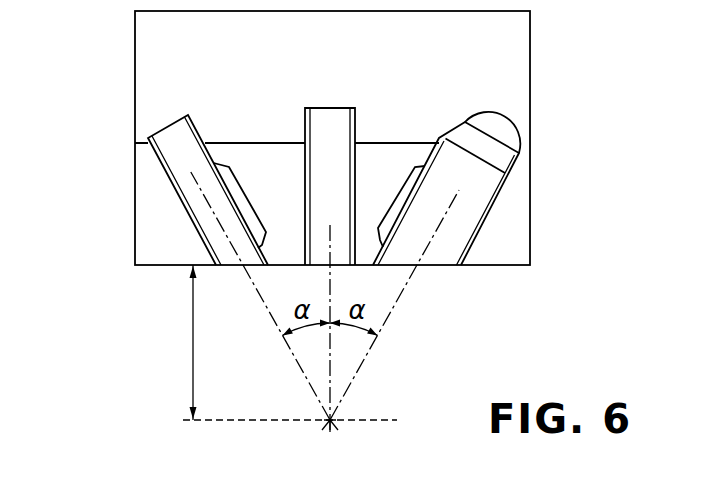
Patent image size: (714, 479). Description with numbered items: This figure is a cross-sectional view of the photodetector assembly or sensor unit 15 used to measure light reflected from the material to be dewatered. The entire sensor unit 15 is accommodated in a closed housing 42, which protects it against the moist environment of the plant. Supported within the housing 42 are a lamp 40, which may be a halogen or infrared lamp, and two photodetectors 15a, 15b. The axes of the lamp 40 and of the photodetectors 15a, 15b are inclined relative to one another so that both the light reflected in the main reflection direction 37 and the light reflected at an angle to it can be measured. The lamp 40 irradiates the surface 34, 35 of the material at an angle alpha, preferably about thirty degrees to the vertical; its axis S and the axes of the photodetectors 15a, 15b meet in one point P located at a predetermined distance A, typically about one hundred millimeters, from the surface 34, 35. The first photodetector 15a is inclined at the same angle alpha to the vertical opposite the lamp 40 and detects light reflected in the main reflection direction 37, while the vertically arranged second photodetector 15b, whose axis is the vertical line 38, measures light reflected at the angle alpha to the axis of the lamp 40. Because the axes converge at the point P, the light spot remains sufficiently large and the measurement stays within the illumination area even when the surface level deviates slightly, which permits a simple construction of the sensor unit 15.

The sensor unit 15 is at (123, 70).
The first photodetector 15a is at (172, 153).
The second photodetector 15b is at (340, 122).
The lamp 40 is at (500, 150).
The housing 42 is at (507, 60).
The main reflection direction 37 is at (257, 293).
The central vertical axis line 38 is at (333, 283).
The surface of the material 34 is at (397, 420).
The surface of the material 35 is at (401, 206).
The second inclined axis line S is at (390, 313).
The distance A is at (192, 347).
The point P is at (337, 424).